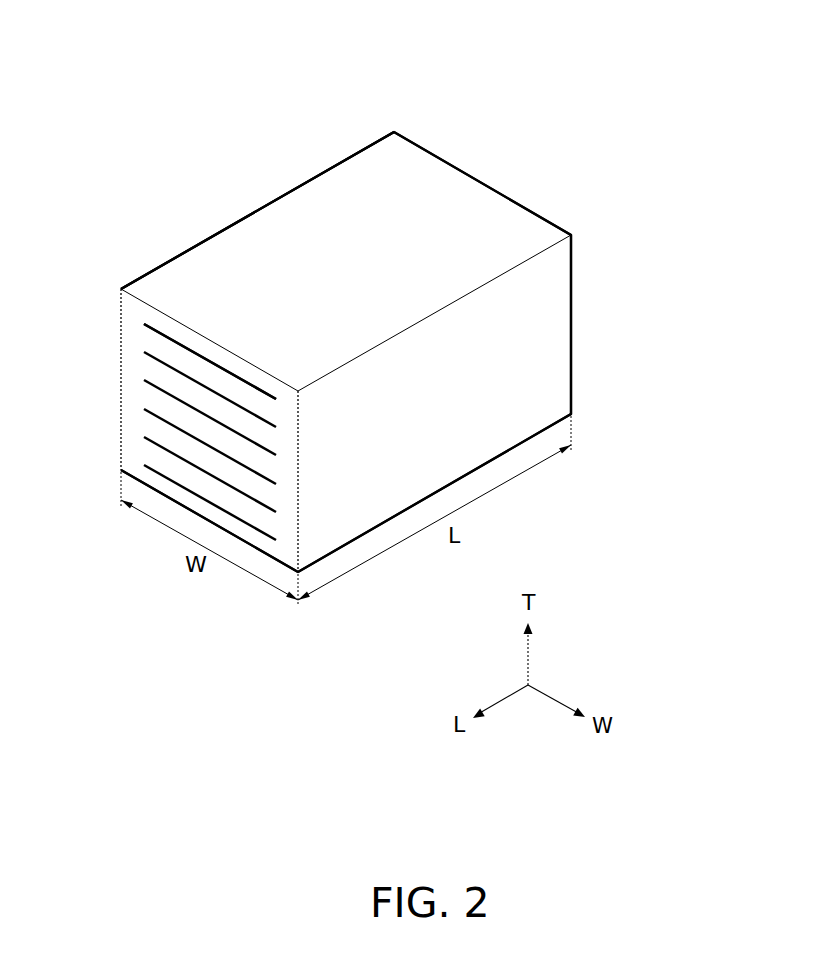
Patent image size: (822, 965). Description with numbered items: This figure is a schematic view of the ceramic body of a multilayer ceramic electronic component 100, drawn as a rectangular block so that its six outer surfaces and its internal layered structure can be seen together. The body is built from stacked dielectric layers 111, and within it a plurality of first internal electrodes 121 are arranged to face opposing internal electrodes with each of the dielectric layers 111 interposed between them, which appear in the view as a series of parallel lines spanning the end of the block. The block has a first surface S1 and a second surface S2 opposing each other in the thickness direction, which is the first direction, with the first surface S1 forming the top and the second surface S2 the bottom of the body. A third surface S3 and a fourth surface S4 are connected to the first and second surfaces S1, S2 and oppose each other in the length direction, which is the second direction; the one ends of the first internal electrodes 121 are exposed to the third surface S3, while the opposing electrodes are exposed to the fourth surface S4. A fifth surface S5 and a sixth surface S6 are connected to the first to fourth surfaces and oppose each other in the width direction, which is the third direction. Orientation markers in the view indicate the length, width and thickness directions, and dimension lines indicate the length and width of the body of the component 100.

The multilayer ceramic electronic component 100 is at (145, 29).
The dielectric layer 111 is at (147, 370).
The first internal electrode 121 is at (146, 325).
The first surface S1 is at (344, 188).
The second surface S2 is at (354, 523).
The third surface S3 is at (200, 490).
The fourth surface S4 is at (469, 204).
The fifth surface S5 is at (556, 340).
The sixth surface S6 is at (188, 276).